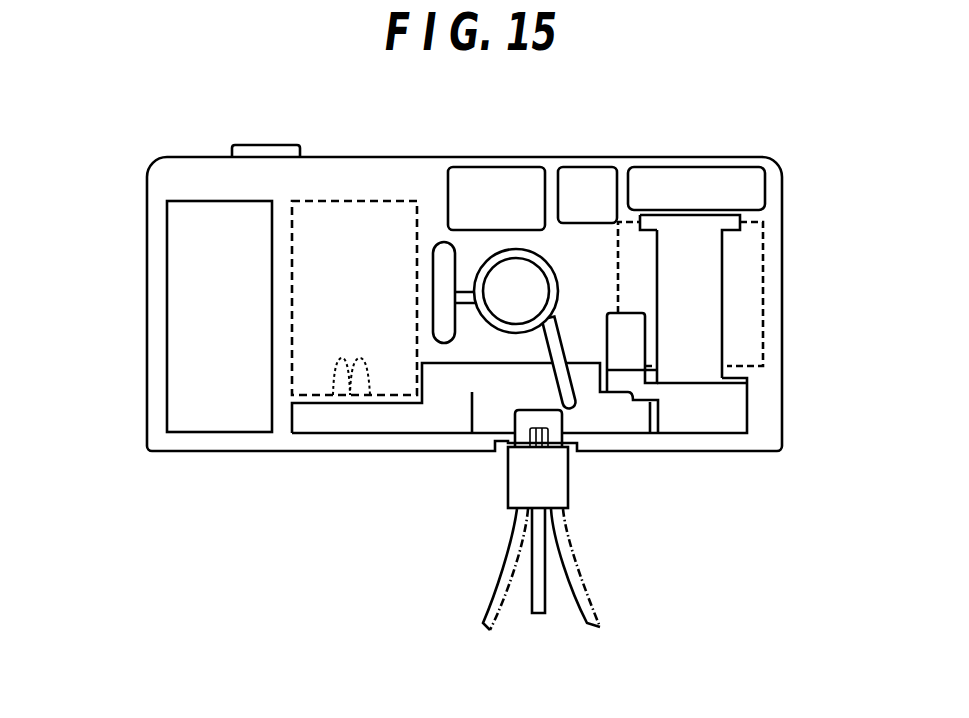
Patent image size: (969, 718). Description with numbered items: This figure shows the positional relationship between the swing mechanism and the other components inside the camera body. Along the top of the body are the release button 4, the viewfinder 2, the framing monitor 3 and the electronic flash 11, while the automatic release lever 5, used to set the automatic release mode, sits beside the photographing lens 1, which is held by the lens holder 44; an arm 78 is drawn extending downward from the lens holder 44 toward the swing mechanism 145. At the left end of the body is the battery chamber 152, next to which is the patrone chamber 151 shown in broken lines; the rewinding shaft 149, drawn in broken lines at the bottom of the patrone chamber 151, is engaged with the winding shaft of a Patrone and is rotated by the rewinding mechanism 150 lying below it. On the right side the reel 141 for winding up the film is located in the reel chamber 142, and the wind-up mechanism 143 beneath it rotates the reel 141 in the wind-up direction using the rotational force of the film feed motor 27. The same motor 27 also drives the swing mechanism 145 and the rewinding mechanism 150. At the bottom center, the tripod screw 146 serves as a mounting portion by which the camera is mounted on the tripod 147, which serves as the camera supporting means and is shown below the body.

The photographing lens 1 is at (518, 272).
The viewfinder 2 is at (485, 177).
The framing monitor 3 is at (584, 178).
The release button 4 is at (272, 150).
The automatic release lever 5 is at (443, 242).
The electronic flash 11 is at (688, 180).
The film feed motor 27 is at (638, 342).
The lens holder 44 is at (493, 333).
The lever arm 78 is at (573, 408).
The reel 141 is at (713, 262).
The reel chamber 142 is at (752, 312).
The wind-up mechanism 143 is at (740, 405).
The swing mechanism 145 is at (627, 427).
The tripod screw 146 is at (515, 436).
The tripod 147 is at (500, 560).
The rewinding shaft 149 is at (330, 390).
The rewinding mechanism 150 is at (343, 425).
The patrone chamber 151 is at (344, 218).
The battery chamber 152 is at (180, 303).